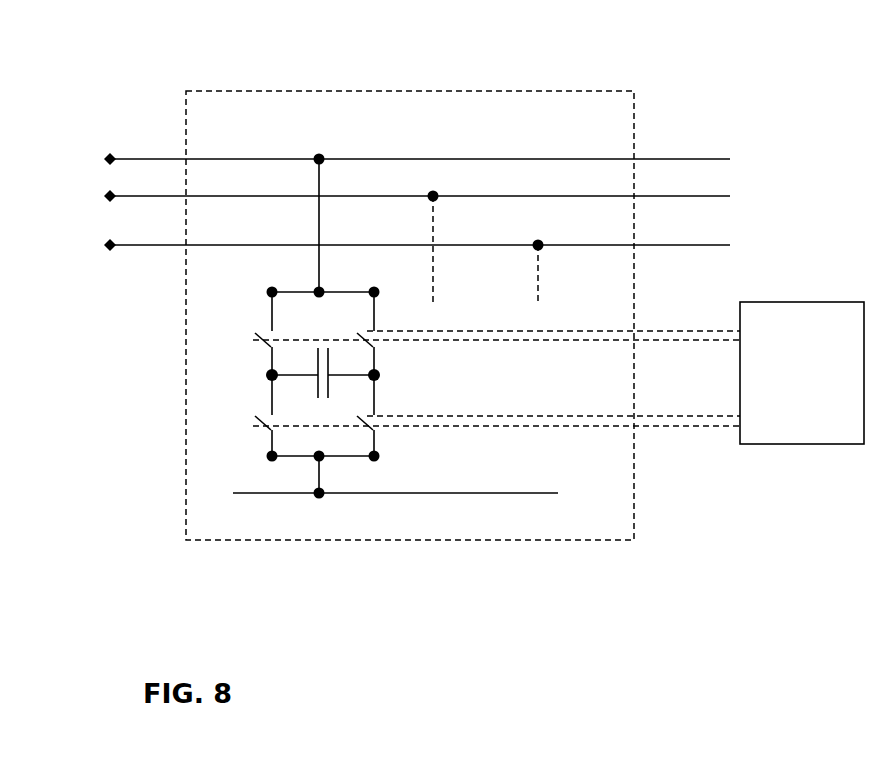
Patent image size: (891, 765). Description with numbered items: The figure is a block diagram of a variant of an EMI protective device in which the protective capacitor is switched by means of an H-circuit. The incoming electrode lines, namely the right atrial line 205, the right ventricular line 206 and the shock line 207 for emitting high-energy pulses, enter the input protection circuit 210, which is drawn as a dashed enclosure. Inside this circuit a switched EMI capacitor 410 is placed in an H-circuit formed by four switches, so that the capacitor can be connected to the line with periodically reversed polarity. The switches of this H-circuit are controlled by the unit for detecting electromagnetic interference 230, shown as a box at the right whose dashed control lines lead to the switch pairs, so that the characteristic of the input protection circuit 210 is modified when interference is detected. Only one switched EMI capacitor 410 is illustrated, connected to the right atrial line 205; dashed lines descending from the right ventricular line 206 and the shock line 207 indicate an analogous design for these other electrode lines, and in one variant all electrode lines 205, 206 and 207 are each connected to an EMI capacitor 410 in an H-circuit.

The right atrial electrode line 205 is at (389, 156).
The right ventricular electrode line 206 is at (389, 240).
The shock line 207 is at (389, 265).
The input protection circuit 210 is at (410, 292).
The unit for detecting electromagnetic interference 230 is at (802, 373).
The switched EMI capacitor 410 is at (486, 329).